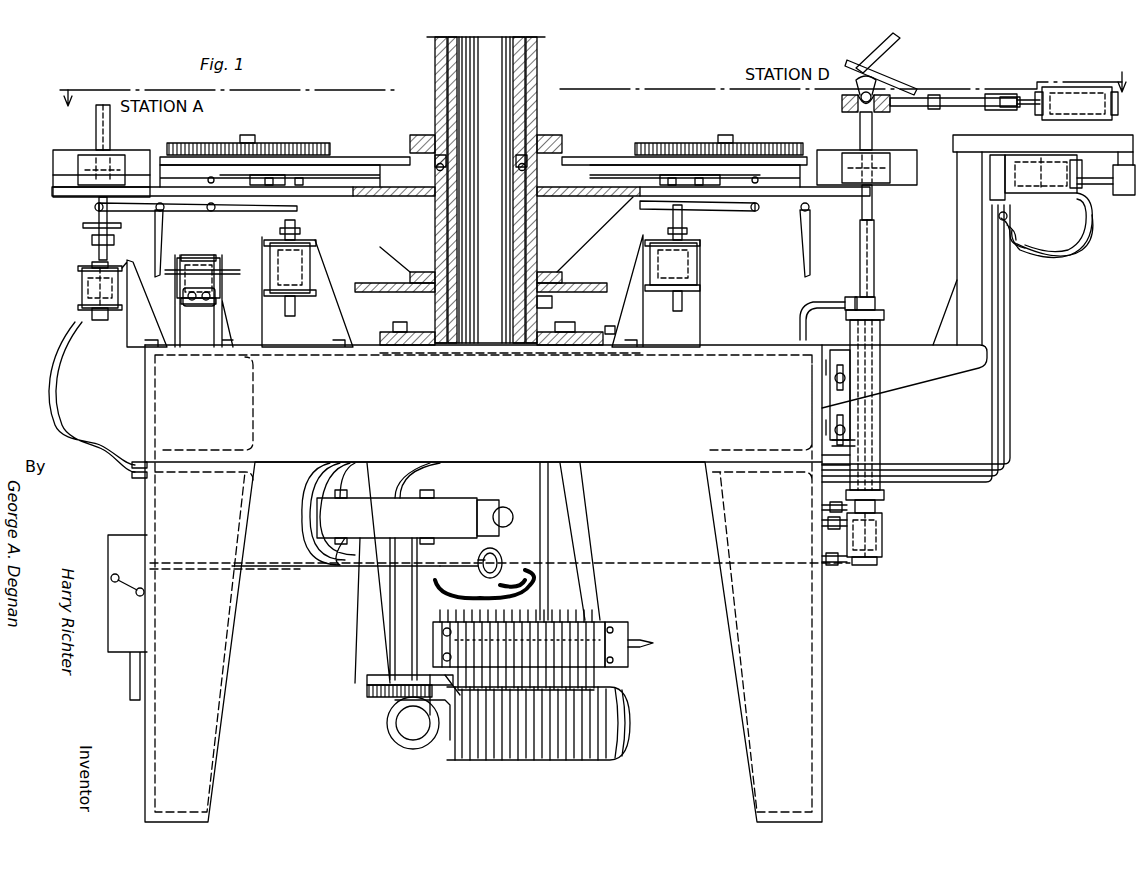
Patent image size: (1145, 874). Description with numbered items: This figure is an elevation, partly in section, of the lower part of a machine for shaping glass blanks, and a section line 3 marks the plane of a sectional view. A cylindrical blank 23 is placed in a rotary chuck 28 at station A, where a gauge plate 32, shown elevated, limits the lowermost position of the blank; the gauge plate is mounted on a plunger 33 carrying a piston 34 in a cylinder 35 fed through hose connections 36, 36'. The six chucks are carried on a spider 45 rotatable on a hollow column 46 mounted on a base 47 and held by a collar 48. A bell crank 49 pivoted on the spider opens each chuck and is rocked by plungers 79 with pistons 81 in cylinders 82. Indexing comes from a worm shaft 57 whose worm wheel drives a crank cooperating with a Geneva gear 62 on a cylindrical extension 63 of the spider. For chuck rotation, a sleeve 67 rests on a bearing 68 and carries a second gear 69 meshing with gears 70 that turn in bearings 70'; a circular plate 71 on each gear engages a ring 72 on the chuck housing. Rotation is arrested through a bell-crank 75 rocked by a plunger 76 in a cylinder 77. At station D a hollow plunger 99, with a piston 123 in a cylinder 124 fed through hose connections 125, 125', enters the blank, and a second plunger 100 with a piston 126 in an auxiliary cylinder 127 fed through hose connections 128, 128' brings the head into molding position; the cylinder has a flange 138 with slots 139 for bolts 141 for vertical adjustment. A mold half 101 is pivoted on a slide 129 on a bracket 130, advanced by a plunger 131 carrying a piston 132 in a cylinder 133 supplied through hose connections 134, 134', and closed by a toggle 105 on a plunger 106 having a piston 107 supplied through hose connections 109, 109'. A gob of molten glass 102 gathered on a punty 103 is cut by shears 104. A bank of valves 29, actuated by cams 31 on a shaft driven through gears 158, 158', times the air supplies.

The section line 3- 3 is at (600, 98).
The cylindrical blank 23 is at (110, 125).
The rotary chuck 28 is at (53, 183).
The bank of valves 29 is at (596, 620).
The cams 31 is at (575, 760).
The gauge plate 32 is at (83, 225).
The plunger 33 is at (92, 244).
The piston 34 is at (82, 283).
The cylinder 35 is at (82, 302).
The hose connection 36 is at (92, 397).
The hose connection 36' is at (121, 455).
The spider 45 is at (496, 229).
The hollow column 46 is at (515, 224).
The base 47 is at (612, 462).
The collar 48 is at (432, 345).
The bell crank 49 is at (155, 240).
The worm shaft 57 is at (317, 520).
The Geneva gear 62 is at (585, 283).
The cylindrical extension 63 is at (435, 237).
The sleeve 67 is at (537, 115).
The bearing 68 is at (527, 170).
The second gear 69 is at (650, 156).
The gears 70 is at (485, 136).
The bearings 70' is at (483, 176).
The circular plate 71 is at (335, 178).
The ring 72 is at (53, 165).
The bell-crank 75 is at (233, 210).
The plunger 76 is at (295, 222).
The cylinder 77 is at (300, 262).
The plungers 79 is at (172, 282).
The pistons 81 is at (204, 268).
The cylinders 82 is at (208, 300).
The hollow plunger 99 is at (874, 250).
The second plunger 100 is at (882, 518).
The mold half 101 is at (842, 103).
The gob of molten glass 102 is at (855, 86).
The punty 103 is at (870, 44).
The shears 104 is at (905, 80).
The toggle 105 is at (988, 96).
The plunger 106 is at (1030, 98).
The piston 107 is at (1078, 88).
The hose connection 109 is at (1021, 240).
The hose connection 109' is at (1065, 245).
The piston 123 is at (880, 320).
The cylinder 124 is at (880, 412).
The hose connection 125 is at (809, 318).
The hose connection 125' is at (805, 498).
The piston 126 is at (876, 535).
The auxiliary cylinder 127 is at (877, 548).
The hose connection 128 is at (807, 529).
The hose connection 128' is at (843, 576).
The slide 129 is at (953, 140).
The bracket 130 is at (975, 240).
The plunger 131 is at (1113, 182).
The piston 132 is at (1025, 155).
The cylinder 133 is at (1045, 193).
The hose connection 134 is at (969, 179).
The hose connection 134' is at (1053, 225).
The flange 138 is at (832, 437).
The slots 139 is at (830, 390).
The bolts 141 is at (845, 378).
The gear 158 is at (399, 734).
The gear 158' is at (394, 698).